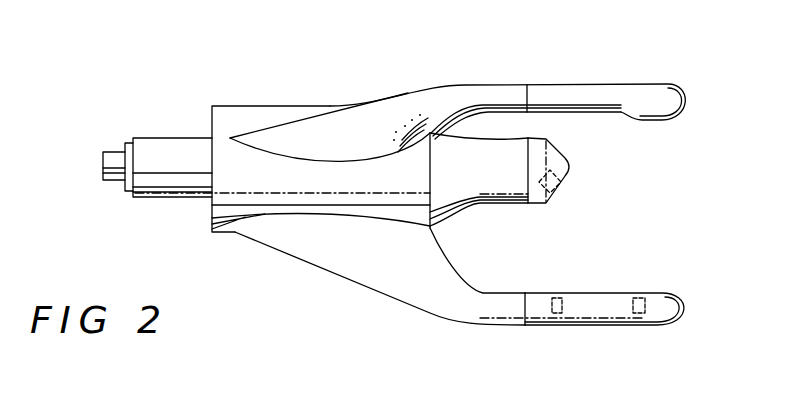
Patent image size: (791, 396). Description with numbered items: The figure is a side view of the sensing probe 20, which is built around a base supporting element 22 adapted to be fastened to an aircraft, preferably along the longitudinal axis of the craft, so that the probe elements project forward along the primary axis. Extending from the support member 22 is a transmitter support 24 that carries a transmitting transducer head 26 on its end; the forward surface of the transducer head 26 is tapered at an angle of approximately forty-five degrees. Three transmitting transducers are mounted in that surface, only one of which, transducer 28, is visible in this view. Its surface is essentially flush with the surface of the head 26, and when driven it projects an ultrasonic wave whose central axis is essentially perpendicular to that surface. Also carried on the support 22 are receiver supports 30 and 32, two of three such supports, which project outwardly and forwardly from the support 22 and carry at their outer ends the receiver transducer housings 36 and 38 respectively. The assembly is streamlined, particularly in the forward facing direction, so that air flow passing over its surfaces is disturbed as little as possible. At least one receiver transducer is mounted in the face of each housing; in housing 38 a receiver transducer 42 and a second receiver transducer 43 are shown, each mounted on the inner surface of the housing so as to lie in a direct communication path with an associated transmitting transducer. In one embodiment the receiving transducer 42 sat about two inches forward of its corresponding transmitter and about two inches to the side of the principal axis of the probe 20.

The probe 20 is at (222, 104).
The base supporting element 22 is at (232, 202).
The transmitter support 24 is at (481, 187).
The transmitting transducer head 26 is at (565, 163).
The transmitting transducer 28 is at (562, 188).
The receiver support 30 is at (370, 120).
The receiver support 32 is at (347, 267).
The receiver transducer housing 36 is at (553, 90).
The receiver transducer housing 38 is at (593, 312).
The receiver transducer 42 is at (638, 303).
The second receiver transducer 43 is at (555, 310).